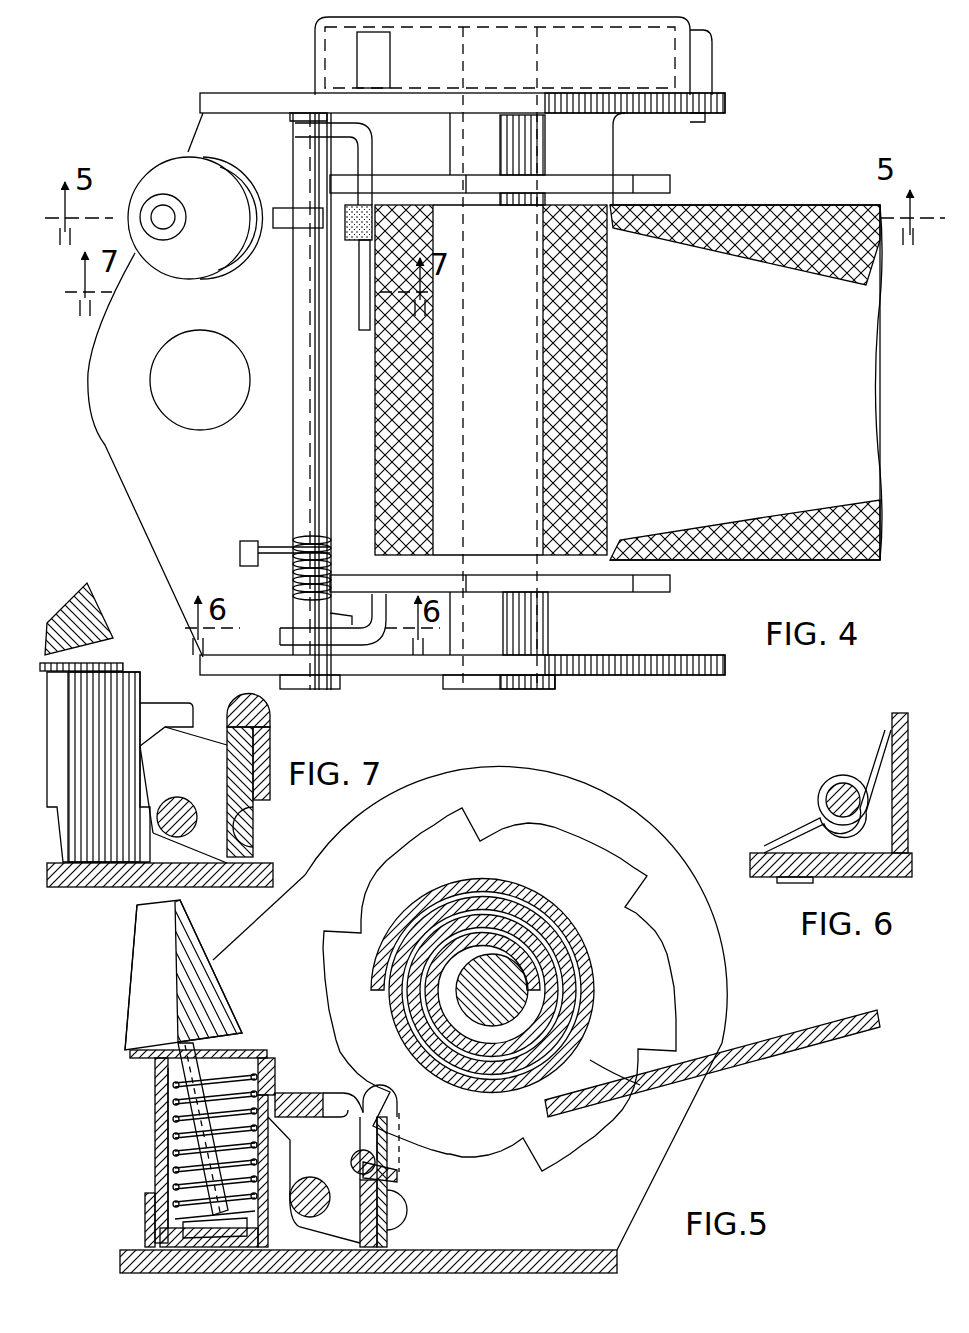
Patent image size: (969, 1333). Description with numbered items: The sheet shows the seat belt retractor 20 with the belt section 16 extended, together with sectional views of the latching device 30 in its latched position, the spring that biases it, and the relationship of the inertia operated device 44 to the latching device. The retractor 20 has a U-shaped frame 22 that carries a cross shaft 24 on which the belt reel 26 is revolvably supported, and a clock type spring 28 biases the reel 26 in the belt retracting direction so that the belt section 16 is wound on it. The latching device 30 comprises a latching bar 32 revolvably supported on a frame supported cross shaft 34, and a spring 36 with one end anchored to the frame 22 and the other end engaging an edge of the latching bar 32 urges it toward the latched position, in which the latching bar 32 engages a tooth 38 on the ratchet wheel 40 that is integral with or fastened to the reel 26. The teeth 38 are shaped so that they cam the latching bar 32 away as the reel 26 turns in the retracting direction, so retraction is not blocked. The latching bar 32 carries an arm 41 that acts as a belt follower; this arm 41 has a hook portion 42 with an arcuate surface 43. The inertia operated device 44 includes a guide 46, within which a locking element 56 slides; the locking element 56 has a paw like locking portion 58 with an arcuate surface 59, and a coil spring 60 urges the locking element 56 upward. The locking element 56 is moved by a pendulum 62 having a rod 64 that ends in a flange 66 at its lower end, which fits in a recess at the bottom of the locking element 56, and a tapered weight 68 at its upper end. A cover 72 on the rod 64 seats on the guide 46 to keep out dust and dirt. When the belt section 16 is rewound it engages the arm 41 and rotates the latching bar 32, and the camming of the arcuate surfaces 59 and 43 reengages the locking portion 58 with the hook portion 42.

In FIG. 4, the belt section 16 is at (760, 204).
In FIG. 5, the belt section 16 is at (788, 1020).
In FIG. 4, the retractor 20 is at (712, 562).
In FIG. 5, the retractor 20 is at (730, 972).
In FIG. 4, the frame 22 is at (213, 91).
In FIG. 7, the frame 22 is at (88, 890).
In FIG. 6, the frame 22 is at (875, 878).
In FIG. 5, the frame 22 is at (548, 772).
In FIG. 4, the cross shaft 24 is at (540, 47).
In FIG. 5, the cross shaft 24 is at (530, 985).
In FIG. 5, the belt reel 26 is at (565, 975).
In FIG. 4, the clock type spring 28 is at (688, 26).
In FIG. 4, the latching device 30 is at (290, 330).
In FIG. 7, the latching device 30 is at (195, 862).
In FIG. 5, the latching device 30 is at (325, 1240).
In FIG. 4, the latching bar 32 is at (365, 412).
In FIG. 7, the latching bar 32 is at (257, 790).
In FIG. 6, the latching bar 32 is at (892, 722).
In FIG. 5, the latching bar 32 is at (380, 1250).
In FIG. 4, the cross shaft 34 is at (293, 462).
In FIG. 7, the cross shaft 34 is at (180, 798).
In FIG. 6, the cross shaft 34 is at (820, 790).
In FIG. 5, the cross shaft 34 is at (302, 1177).
In FIG. 4, the spring 36 is at (268, 541).
In FIG. 6, the spring 36 is at (872, 772).
In FIG. 5, the tooth 38 is at (500, 815).
In FIG. 4, the ratchet wheel 40 is at (672, 182).
In FIG. 5, the ratchet wheel 40 is at (583, 855).
In FIG. 4, the arm 41 is at (360, 315).
In FIG. 7, the arm 41 is at (262, 716).
In FIG. 5, the arm 41 is at (402, 1135).
In FIG. 4, the hook portion 42 is at (345, 240).
In FIG. 7, the hook portion 42 is at (236, 757).
In FIG. 5, the hook portion 42 is at (360, 1168).
In FIG. 5, the arcuate surface 43 is at (357, 1151).
In FIG. 4, the inertia operated device 44 is at (196, 160).
In FIG. 7, the inertia operated device 44 is at (140, 705).
In FIG. 5, the inertia operated device 44 is at (153, 1112).
In FIG. 5, the guide 46 is at (143, 1205).
In FIG. 5, the locking element 56 is at (158, 1148).
In FIG. 7, the locking portion 58 is at (150, 710).
In FIG. 5, the locking portion 58 is at (310, 1093).
In FIG. 5, the arcuate surface 59 is at (345, 1095).
In FIG. 5, the coil spring 60 is at (245, 1068).
In FIG. 4, the pendulum 62 is at (130, 188).
In FIG. 7, the pendulum 62 is at (95, 602).
In FIG. 5, the pendulum 62 is at (120, 1032).
In FIG. 5, the rod 64 is at (180, 1045).
In FIG. 5, the flange 66 is at (232, 1240).
In FIG. 5, the tapered weight 68 is at (130, 988).
In FIG. 5, the cover 72 is at (140, 1058).